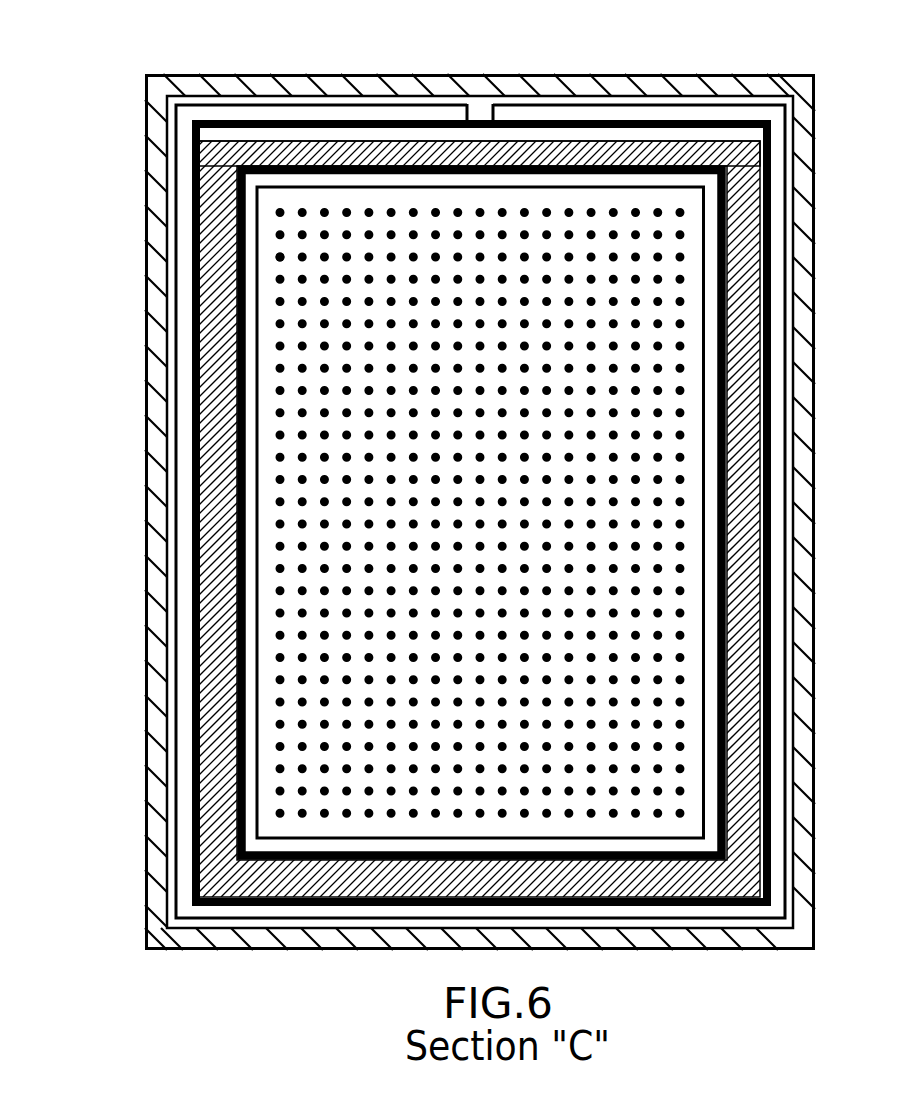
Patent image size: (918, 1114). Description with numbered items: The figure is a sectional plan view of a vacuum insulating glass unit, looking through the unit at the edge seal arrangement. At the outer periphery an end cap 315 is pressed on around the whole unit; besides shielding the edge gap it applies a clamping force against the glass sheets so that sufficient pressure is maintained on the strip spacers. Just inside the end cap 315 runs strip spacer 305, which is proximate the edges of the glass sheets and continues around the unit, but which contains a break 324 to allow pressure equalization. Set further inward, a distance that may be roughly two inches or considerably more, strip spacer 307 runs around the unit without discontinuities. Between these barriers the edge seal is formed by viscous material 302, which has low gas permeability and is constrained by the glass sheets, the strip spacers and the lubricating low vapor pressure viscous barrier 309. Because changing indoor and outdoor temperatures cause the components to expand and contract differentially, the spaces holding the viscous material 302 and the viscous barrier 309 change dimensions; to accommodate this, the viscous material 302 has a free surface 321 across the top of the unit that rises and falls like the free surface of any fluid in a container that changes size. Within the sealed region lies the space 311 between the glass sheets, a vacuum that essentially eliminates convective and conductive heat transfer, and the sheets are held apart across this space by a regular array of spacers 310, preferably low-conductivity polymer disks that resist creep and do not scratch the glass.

The viscous material 302 is at (222, 390).
The strip spacer 305 is at (185, 593).
The strip spacer 307 is at (252, 515).
The lubricating low vapor pressure viscous barrier 309 is at (237, 725).
The spacer 310 is at (280, 258).
The space 311 is at (288, 363).
The end cap 315 is at (147, 783).
The free surface 321 is at (573, 140).
The break 324 is at (480, 110).